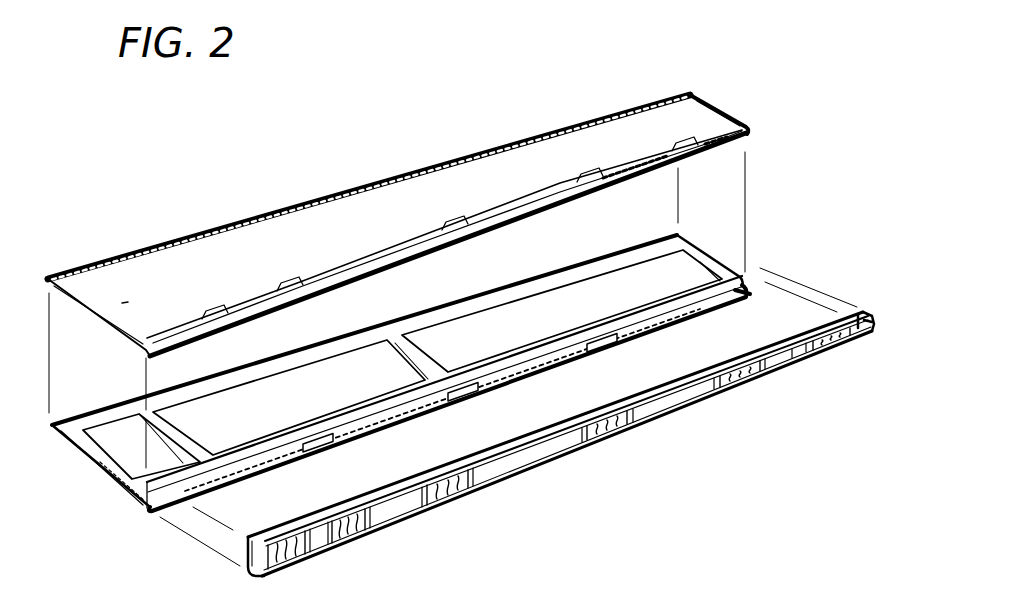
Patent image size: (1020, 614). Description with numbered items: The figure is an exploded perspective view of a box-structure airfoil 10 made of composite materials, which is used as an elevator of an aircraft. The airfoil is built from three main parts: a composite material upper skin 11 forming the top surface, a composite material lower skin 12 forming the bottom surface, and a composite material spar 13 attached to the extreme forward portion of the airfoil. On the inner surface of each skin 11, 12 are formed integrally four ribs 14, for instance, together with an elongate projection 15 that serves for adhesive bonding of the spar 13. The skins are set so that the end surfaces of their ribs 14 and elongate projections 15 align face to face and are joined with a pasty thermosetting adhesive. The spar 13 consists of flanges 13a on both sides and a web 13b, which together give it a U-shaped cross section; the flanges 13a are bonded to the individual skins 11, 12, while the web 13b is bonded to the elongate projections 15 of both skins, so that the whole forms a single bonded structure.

The box-structure airfoil 10 is at (243, 204).
The upper skin 11 is at (380, 204).
The lower skin 12 is at (555, 290).
The spar 13 is at (673, 425).
The flanges 13a is at (700, 370).
The web 13b is at (243, 558).
The ribs 14 is at (717, 266).
The elongate projection 15 is at (143, 378).